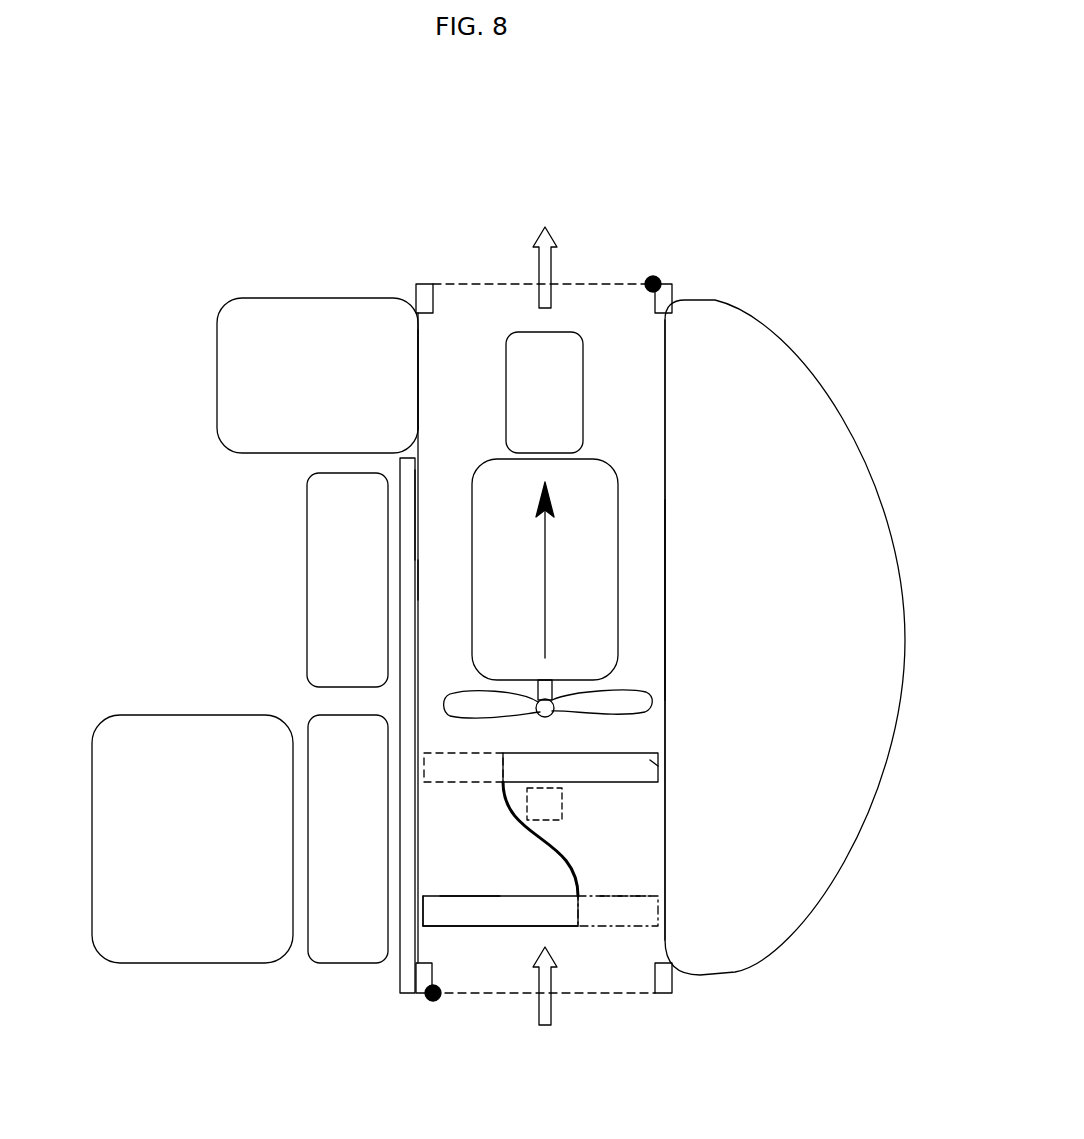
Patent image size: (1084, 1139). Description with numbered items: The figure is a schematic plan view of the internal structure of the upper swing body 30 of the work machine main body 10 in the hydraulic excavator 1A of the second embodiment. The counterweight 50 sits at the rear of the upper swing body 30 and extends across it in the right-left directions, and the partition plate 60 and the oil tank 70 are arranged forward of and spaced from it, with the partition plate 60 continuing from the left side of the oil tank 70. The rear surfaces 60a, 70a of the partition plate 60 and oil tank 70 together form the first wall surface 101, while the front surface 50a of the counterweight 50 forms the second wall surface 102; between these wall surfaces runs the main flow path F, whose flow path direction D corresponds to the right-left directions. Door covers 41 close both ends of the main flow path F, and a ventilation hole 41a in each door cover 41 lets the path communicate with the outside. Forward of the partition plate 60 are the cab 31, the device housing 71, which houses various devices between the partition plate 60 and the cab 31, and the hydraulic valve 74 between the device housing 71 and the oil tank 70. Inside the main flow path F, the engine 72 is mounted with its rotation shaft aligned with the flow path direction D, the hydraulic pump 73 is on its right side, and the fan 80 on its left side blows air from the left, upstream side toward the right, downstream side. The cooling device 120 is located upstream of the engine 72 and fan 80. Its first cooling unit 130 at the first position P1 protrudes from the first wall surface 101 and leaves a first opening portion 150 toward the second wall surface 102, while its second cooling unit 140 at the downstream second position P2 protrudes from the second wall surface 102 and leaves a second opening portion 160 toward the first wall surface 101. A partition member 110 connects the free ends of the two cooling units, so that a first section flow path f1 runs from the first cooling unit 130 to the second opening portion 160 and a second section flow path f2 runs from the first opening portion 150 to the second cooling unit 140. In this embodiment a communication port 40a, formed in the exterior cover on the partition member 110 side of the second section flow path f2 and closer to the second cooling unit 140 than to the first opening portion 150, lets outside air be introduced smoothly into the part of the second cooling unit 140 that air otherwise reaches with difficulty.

The hydraulic excavator 1A is at (668, 152).
The work machine main body 10 is at (708, 217).
The upper swing body 30 is at (714, 263).
The door cover 41 is at (448, 272).
The ventilation hole 41a is at (493, 283).
The counterweight 50 is at (798, 340).
The front surface of the counterweight 50a is at (666, 583).
The second wall surface 102 is at (746, 600).
The oil tank 70 is at (228, 368).
The rear surface of the oil tank 70a is at (416, 408).
The rear surface of the partition plate 60a is at (416, 522).
The first wall surface 101 is at (287, 445).
The partition plate 60 is at (405, 640).
The hydraulic valve 74 is at (318, 596).
The cab 31 is at (142, 725).
The device housing 71 is at (326, 955).
The hydraulic pump 73 is at (580, 398).
The engine 72 is at (614, 510).
The flow path direction D is at (543, 582).
The main flow path F is at (450, 594).
The fan 80 is at (633, 695).
The second cooling unit 140 is at (640, 758).
The second opening portion 160 is at (452, 754).
The second position P2 is at (658, 766).
The communication port 40a is at (562, 805).
The partition member 110 is at (515, 815).
The cooling device 120 is at (643, 840).
The first opening portion 150 is at (655, 910).
The first cooling unit 130 is at (490, 916).
The first position P1 is at (432, 926).
The first section flow path f1 is at (494, 884).
The second section flow path f2 is at (641, 884).